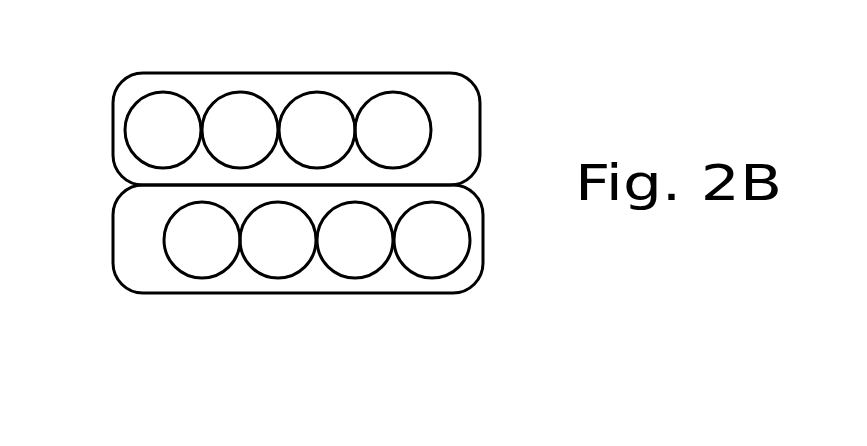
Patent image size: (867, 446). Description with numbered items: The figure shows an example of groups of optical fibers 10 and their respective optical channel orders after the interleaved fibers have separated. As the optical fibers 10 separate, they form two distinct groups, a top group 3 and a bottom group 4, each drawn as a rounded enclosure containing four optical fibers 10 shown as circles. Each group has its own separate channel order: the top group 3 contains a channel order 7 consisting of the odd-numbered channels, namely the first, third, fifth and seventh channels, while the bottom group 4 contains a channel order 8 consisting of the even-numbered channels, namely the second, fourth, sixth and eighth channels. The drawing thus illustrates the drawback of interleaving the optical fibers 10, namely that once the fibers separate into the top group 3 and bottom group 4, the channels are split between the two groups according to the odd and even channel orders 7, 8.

The top group 3 is at (436, 73).
The bottom group 4 is at (446, 293).
The channel order 7 is at (447, 132).
The channel order 8 is at (142, 239).
The optical fibers 10 is at (246, 92).